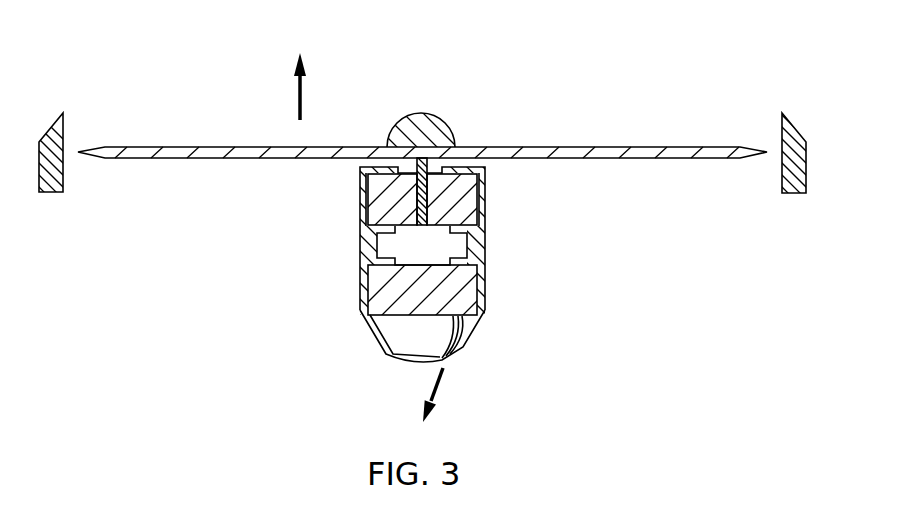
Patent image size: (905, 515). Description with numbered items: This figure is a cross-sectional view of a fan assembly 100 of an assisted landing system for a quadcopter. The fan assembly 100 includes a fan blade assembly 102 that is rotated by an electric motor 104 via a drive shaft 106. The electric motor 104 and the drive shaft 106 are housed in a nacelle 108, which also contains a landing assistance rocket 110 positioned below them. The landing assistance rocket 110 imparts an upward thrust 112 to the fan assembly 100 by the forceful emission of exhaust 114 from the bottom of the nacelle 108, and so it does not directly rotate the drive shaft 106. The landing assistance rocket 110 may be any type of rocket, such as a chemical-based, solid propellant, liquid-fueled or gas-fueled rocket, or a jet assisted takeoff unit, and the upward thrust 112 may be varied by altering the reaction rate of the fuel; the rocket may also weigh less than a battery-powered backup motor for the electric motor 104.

The fan assembly 100 is at (154, 72).
The fan blade assembly 102 is at (428, 113).
The electric motor 104 is at (470, 182).
The drive shaft 106 is at (425, 197).
The nacelle 108 is at (372, 243).
The landing assistance rocket 110 is at (380, 280).
The upward thrust 112 is at (300, 97).
The exhaust 114 is at (437, 386).